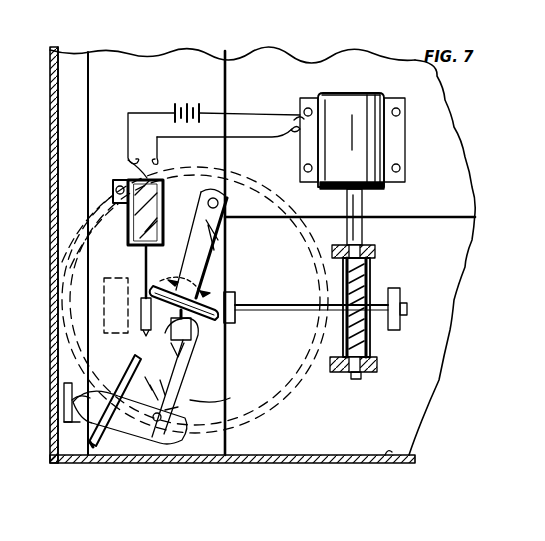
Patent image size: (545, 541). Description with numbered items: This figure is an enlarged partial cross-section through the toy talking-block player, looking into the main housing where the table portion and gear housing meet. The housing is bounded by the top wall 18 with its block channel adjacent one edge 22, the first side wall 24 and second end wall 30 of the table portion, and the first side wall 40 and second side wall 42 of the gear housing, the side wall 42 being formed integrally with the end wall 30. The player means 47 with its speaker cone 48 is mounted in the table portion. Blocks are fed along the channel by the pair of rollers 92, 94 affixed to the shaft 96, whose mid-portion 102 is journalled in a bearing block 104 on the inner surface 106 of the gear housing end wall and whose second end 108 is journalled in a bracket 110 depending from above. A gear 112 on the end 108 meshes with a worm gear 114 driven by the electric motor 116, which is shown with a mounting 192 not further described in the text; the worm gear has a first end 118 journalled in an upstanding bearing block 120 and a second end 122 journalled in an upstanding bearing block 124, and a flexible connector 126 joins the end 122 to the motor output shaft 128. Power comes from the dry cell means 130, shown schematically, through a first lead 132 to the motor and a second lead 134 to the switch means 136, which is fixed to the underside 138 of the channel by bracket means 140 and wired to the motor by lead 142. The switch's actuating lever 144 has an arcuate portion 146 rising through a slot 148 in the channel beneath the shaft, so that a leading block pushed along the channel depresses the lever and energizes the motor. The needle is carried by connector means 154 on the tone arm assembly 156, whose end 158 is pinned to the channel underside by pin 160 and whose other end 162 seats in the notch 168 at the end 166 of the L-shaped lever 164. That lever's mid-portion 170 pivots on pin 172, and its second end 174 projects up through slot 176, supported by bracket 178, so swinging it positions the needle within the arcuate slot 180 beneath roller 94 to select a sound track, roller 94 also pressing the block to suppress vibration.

The top wall 18 is at (463, 177).
The edge 22 is at (58, 236).
The first side wall 24 is at (57, 300).
The second end wall 30 is at (283, 463).
The first side wall 40 is at (401, 216).
The second side wall 42 is at (384, 463).
The player means 47 is at (112, 216).
The speaker cone 48 is at (262, 186).
The roller 92 is at (120, 268).
The roller 94 is at (217, 276).
The shaft 96 is at (269, 312).
The mid-portion 102 is at (241, 303).
The bearing block 104 is at (232, 324).
The inner surface 106 is at (226, 250).
The second end 108 is at (395, 287).
The bracket 110 is at (394, 330).
The gear 112 is at (372, 270).
The worm gear 114 is at (342, 332).
The electric motor 116 is at (380, 146).
The first end 118 is at (349, 373).
The bearing block 120 is at (378, 365).
The second end 122 is at (372, 247).
The bearing block 124 is at (340, 251).
The flexible connector 126 is at (345, 212).
The output shaft 128 is at (362, 185).
The dry cell means 130 is at (188, 104).
The first lead 132 is at (260, 112).
The second lead 134 is at (139, 104).
The switch means 136 is at (165, 212).
The underside 138 is at (116, 154).
The bracket means 140 is at (128, 228).
The lead 142 is at (242, 143).
The actuating lever 144 is at (149, 265).
The arcuate portion 146 is at (141, 333).
The slot 148 is at (170, 334).
The connector means 154 is at (187, 346).
The tone arm assembly 156 is at (222, 238).
The end 158 is at (266, 197).
The pin 160 is at (213, 184).
The end 162 is at (190, 376).
The L-shaped lever 164 is at (190, 404).
The end 166 is at (180, 366).
The notch 168 is at (170, 335).
The mid-portion 170 is at (153, 428).
The pin 172 is at (173, 428).
The second end 174 is at (67, 403).
The slot 176 is at (64, 395).
The bracket 178 is at (102, 433).
The arcuate slot 180 is at (232, 284).
The motor mounting bracket 192 is at (388, 128).